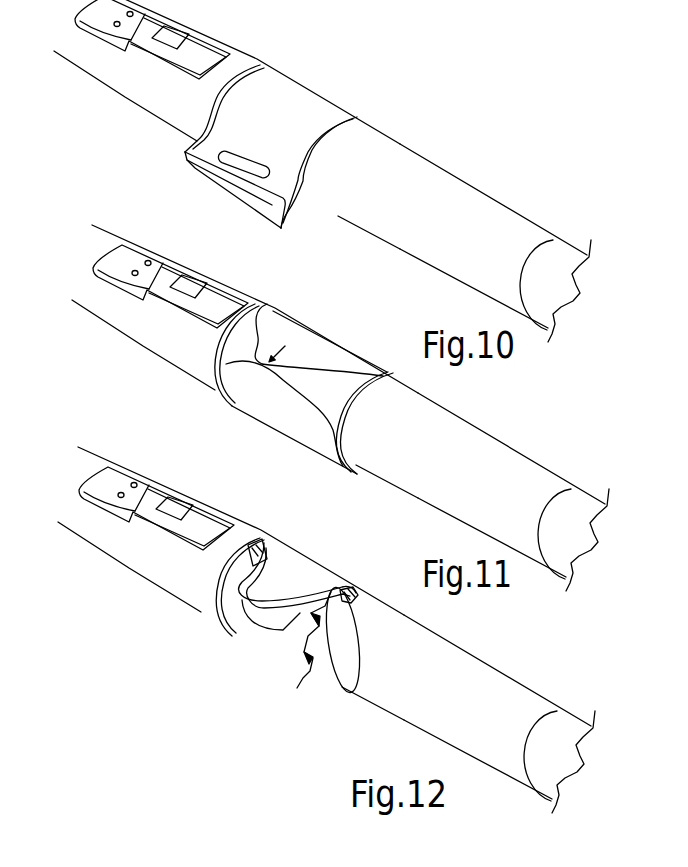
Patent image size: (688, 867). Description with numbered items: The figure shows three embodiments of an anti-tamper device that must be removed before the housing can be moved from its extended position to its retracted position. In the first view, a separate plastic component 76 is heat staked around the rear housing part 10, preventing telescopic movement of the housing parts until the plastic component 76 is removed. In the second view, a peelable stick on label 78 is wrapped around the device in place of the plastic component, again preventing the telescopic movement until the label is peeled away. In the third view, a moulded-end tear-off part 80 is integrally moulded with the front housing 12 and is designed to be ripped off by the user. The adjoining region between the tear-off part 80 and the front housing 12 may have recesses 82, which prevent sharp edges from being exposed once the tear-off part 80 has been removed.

In FIG. 10, the rear housing part 10 is at (165, 107).
In FIG. 11, the rear housing part 10 is at (168, 348).
In FIG. 12, the rear housing part 10 is at (172, 552).
In FIG. 10, the front housing 12 is at (472, 213).
In FIG. 11, the front housing 12 is at (492, 460).
In FIG. 12, the front housing 12 is at (468, 685).
In FIG. 10, the plastic component 76 is at (283, 100).
In FIG. 11, the peelable stick on label 78 is at (307, 430).
In FIG. 12, the moulded-end tear-off part 80 is at (313, 580).
In FIG. 12, the recesses 82 is at (342, 690).